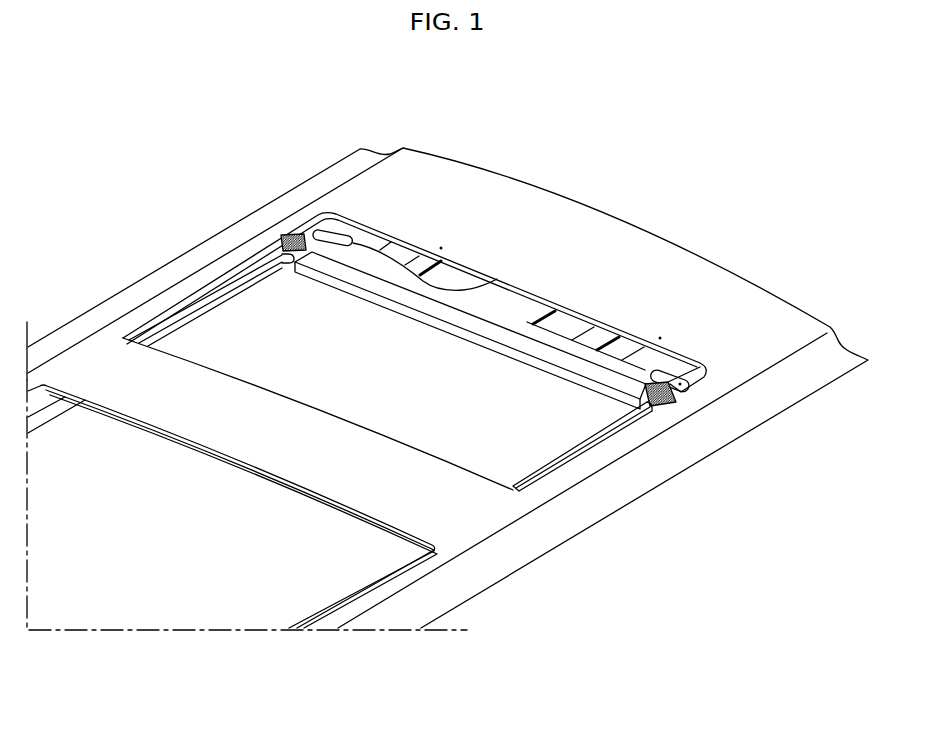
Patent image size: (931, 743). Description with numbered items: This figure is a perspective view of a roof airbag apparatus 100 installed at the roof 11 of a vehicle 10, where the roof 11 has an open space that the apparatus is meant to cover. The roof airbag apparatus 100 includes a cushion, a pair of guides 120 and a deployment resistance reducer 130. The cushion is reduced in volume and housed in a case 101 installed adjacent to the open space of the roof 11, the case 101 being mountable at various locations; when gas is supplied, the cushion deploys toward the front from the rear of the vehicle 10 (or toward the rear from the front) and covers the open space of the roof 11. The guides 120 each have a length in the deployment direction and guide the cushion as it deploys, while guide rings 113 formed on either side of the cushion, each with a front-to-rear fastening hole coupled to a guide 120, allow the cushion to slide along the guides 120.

The vehicle 10 is at (727, 280).
The roof 11 is at (228, 327).
The roof airbag apparatus 100 is at (472, 308).
The case 101 is at (566, 345).
The guide rings 113 is at (287, 240).
The guides 120 is at (543, 473).
The deployment resistance reducer 130 is at (679, 397).